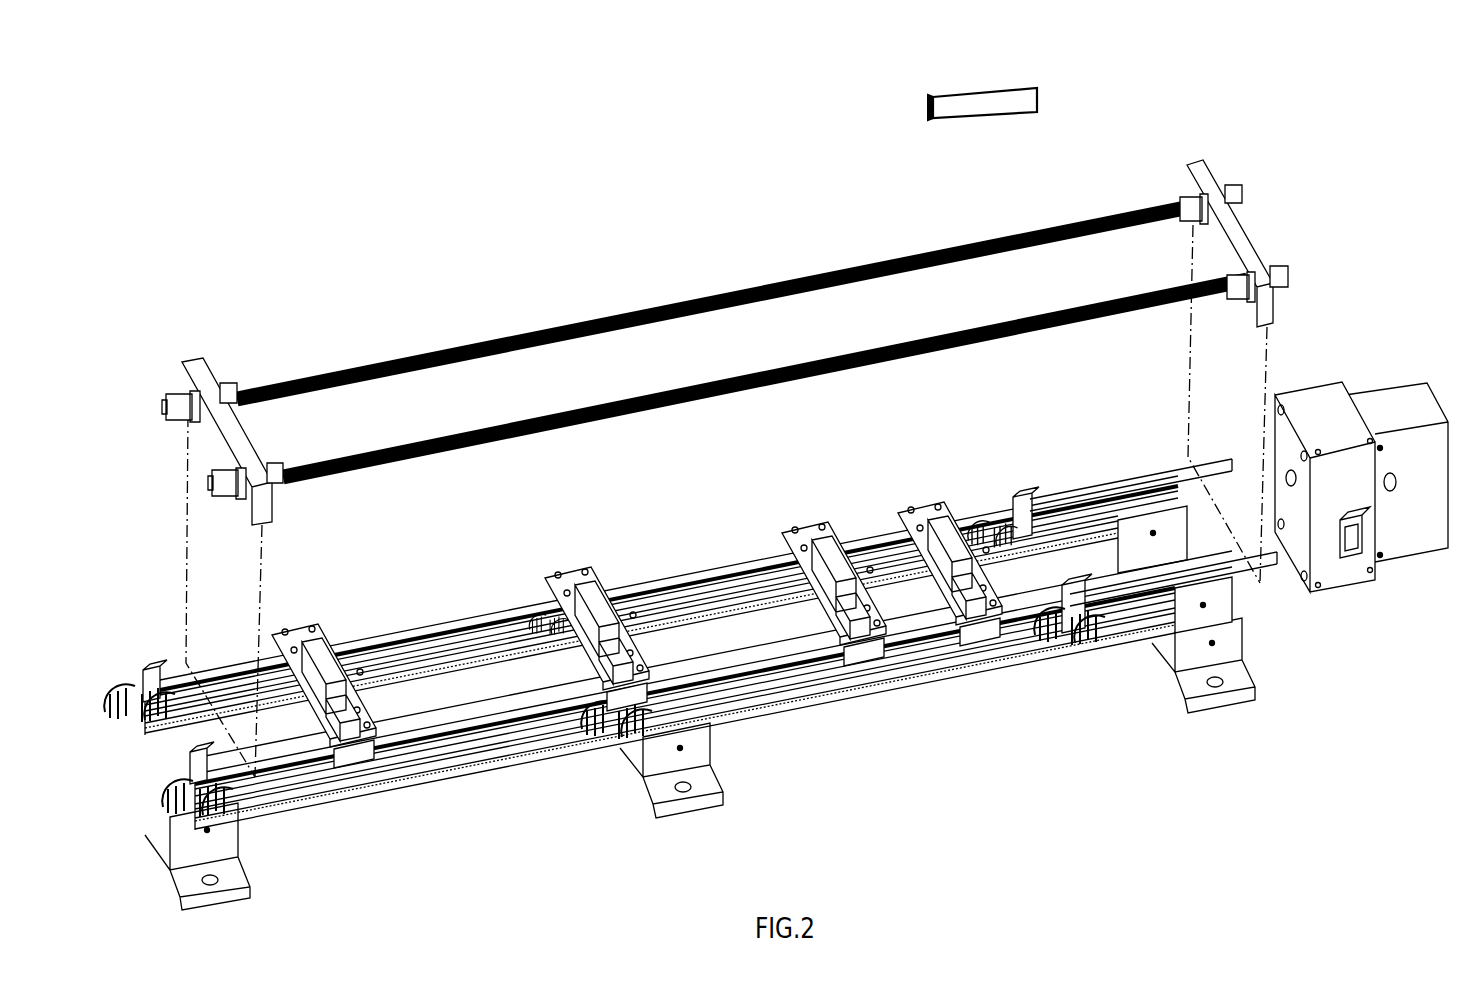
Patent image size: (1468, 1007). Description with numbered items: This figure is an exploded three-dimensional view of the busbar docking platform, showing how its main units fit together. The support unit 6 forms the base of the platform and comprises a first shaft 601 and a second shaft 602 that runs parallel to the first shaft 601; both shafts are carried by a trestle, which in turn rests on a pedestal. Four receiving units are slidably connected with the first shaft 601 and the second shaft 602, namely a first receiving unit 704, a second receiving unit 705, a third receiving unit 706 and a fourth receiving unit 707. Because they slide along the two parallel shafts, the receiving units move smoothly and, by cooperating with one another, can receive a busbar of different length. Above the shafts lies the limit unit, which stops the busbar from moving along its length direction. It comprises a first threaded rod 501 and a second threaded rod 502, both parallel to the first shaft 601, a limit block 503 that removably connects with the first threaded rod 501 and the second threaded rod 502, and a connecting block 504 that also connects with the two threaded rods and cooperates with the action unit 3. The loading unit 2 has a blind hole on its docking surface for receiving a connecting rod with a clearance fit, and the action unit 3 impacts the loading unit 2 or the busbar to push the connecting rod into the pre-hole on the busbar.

The loading unit 2 is at (948, 98).
The action unit 3 is at (1328, 397).
The support unit 6 is at (1225, 643).
The first threaded rod 501 is at (378, 453).
The second threaded rod 502 is at (507, 333).
The limit block 503 is at (205, 388).
The connecting block 504 is at (1233, 233).
The first shaft 601 is at (775, 653).
The second shaft 602 is at (718, 572).
The first receiving unit 704 is at (948, 523).
The second receiving unit 705 is at (832, 547).
The third receiving unit 706 is at (598, 588).
The fourth receiving unit 707 is at (322, 647).